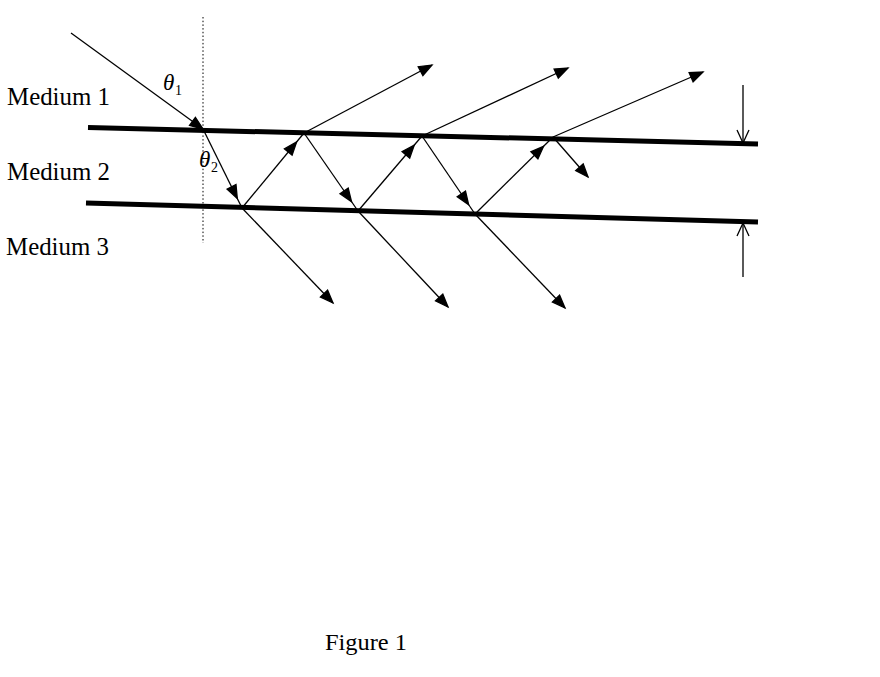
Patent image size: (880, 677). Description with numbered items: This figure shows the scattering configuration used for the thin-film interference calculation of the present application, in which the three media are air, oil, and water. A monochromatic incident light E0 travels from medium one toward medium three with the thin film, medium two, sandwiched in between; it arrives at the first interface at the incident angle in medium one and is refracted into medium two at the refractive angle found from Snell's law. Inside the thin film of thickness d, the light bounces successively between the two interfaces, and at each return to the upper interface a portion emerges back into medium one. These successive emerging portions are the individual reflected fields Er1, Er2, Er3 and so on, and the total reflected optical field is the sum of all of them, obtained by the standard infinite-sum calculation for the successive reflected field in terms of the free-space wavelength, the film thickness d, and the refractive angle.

The incident light field E0 is at (137, 79).
The first reflected field Er1 is at (368, 95).
The second reflected field Er2 is at (495, 96).
The third reflected field Er3 is at (628, 99).
The thin film thickness d is at (742, 181).